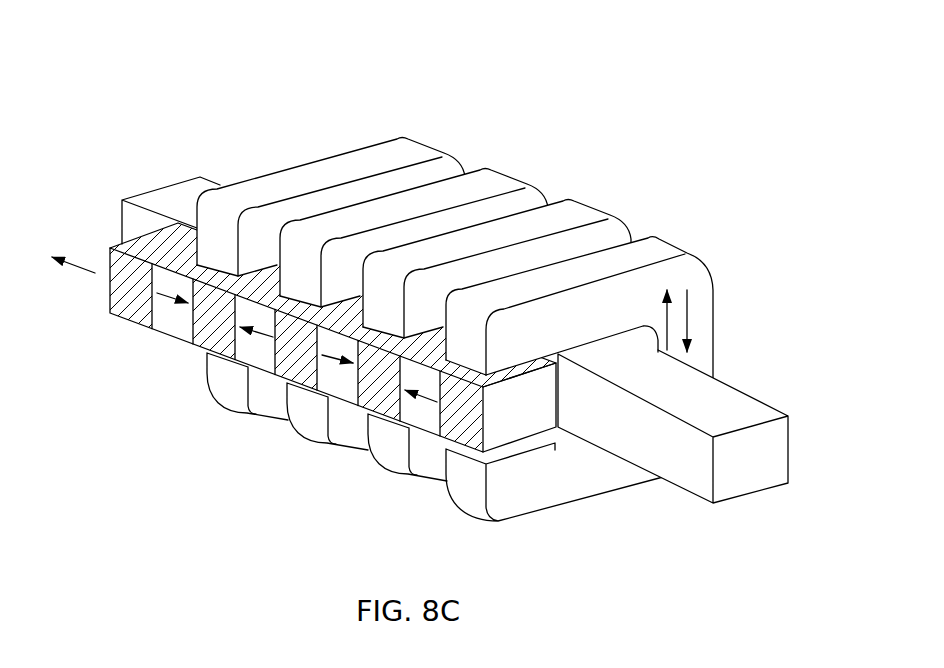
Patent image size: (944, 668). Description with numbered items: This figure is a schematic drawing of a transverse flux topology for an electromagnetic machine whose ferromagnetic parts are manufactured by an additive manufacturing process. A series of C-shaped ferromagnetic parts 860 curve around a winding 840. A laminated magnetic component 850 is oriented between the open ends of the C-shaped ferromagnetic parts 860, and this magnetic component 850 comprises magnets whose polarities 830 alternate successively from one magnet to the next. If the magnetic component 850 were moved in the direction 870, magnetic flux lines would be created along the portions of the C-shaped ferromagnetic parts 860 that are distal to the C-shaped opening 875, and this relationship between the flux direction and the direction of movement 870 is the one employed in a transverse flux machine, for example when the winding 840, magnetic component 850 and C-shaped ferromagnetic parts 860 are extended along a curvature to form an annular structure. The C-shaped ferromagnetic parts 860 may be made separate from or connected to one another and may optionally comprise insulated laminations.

The polarities 830 is at (176, 318).
The winding 840 is at (746, 501).
The laminated magnetic component 850 is at (104, 316).
The C-shaped ferromagnetic parts 860 is at (428, 146).
The direction 870 is at (74, 262).
The C-shaped opening 875 is at (694, 312).